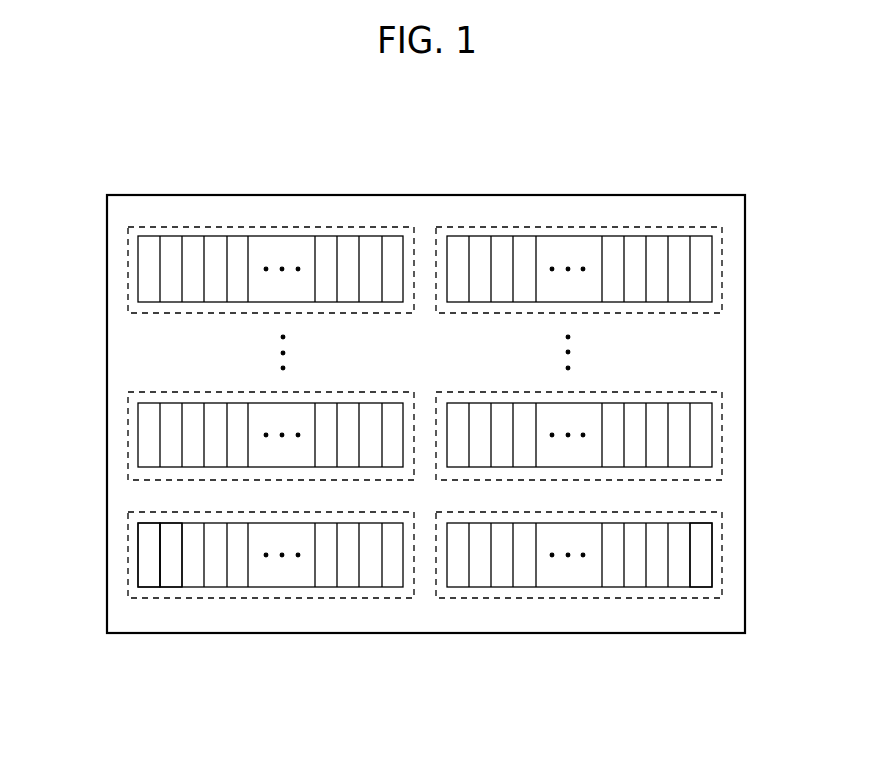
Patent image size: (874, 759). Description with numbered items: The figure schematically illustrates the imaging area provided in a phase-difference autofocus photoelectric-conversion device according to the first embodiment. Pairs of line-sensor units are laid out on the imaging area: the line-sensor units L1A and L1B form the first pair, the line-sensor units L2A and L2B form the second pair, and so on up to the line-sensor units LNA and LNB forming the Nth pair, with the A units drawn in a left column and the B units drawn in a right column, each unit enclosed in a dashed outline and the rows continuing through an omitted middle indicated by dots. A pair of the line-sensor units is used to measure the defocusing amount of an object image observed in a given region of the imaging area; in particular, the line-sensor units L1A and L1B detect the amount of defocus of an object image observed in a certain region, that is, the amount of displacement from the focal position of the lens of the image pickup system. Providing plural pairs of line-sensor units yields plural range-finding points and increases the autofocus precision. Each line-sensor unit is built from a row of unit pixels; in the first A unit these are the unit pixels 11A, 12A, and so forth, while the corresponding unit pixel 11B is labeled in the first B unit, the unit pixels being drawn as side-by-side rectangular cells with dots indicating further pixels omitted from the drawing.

The line-sensor unit LNA is at (128, 260).
The line-sensor unit LNB is at (722, 261).
The line-sensor unit L2A is at (128, 425).
The line-sensor unit L2B is at (722, 426).
The line-sensor unit L1A is at (128, 545).
The line-sensor unit L1B is at (722, 548).
The unit pixel 11A is at (145, 587).
The unit pixel 12A is at (170, 587).
The unit pixel 11B is at (697, 587).